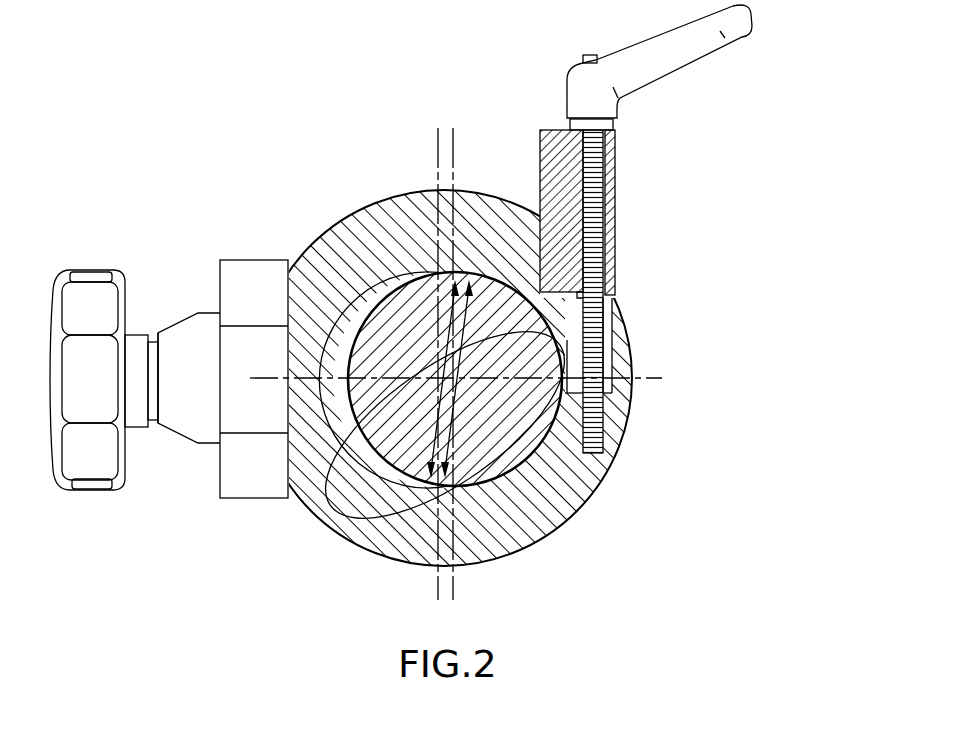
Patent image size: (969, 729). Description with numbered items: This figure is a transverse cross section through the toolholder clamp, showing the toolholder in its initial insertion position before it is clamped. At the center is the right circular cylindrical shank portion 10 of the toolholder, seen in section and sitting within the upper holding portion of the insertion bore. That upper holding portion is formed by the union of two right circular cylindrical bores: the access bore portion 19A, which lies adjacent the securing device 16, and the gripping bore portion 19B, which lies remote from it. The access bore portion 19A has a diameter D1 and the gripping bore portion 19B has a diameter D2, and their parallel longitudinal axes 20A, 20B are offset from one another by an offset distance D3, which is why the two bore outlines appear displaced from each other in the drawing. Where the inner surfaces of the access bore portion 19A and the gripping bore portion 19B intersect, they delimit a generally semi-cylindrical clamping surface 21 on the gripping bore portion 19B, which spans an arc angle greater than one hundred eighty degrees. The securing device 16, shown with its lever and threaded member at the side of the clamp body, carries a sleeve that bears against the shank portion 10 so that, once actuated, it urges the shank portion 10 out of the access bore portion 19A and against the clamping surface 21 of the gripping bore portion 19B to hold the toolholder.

The shank portion 10 is at (352, 292).
The securing device 16 is at (676, 48).
The access bore portion 19A is at (567, 360).
The gripping bore portion 19B is at (358, 327).
The longitudinal axis of access bore portion 20A is at (582, 490).
The longitudinal axis of gripping bore portion 20B is at (315, 312).
The clamping surface 21 is at (328, 485).
The diameter of access bore portion D1 is at (548, 500).
The diameter of gripping bore portion D2 is at (348, 533).
The offset distance D3 is at (503, 132).